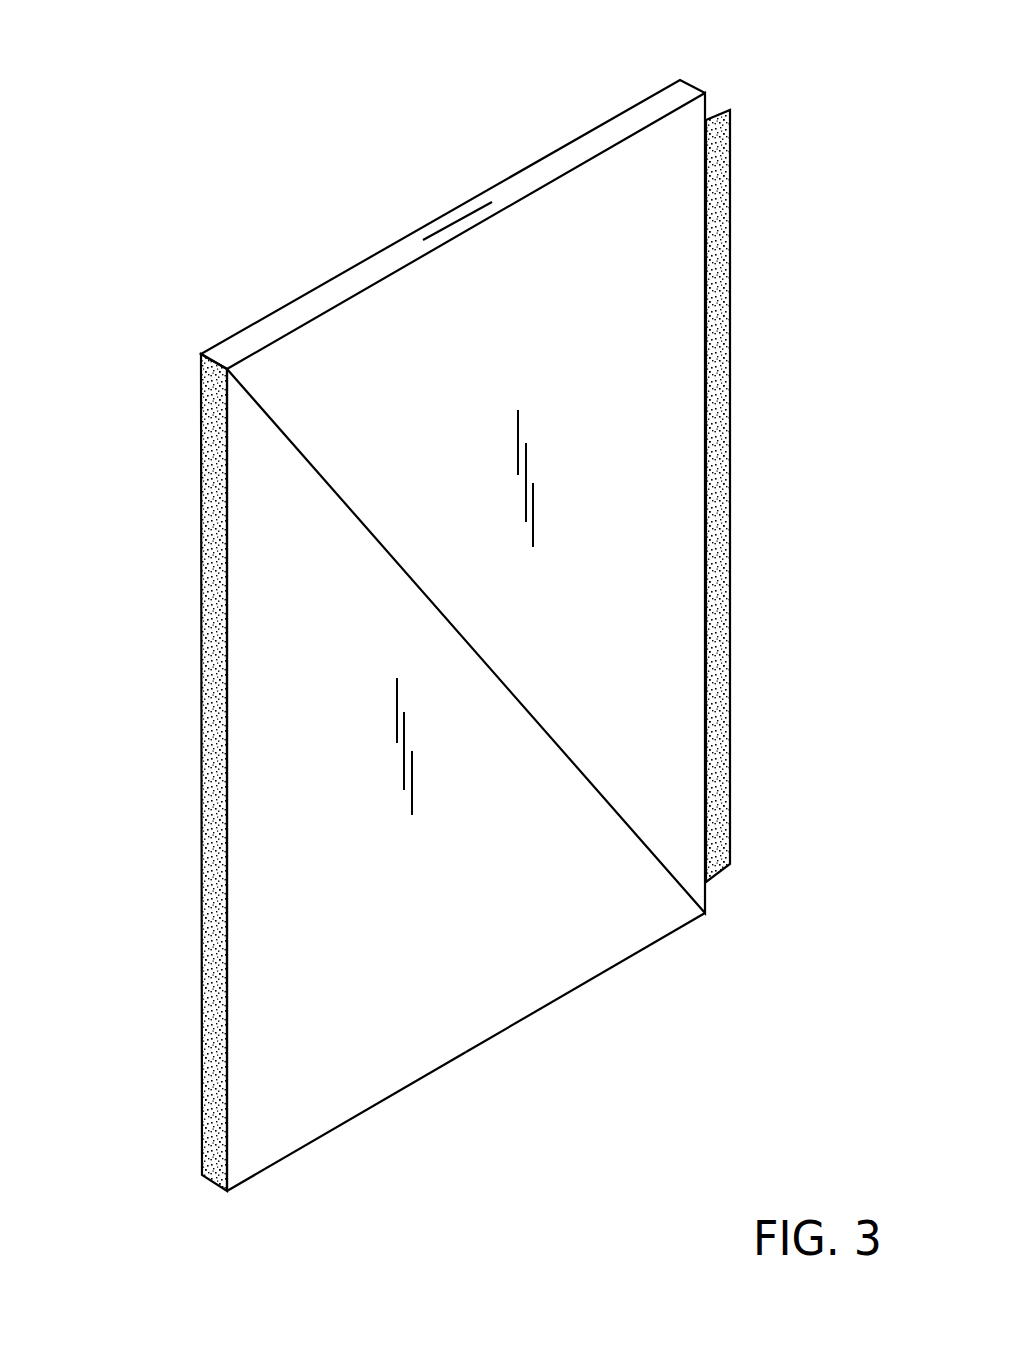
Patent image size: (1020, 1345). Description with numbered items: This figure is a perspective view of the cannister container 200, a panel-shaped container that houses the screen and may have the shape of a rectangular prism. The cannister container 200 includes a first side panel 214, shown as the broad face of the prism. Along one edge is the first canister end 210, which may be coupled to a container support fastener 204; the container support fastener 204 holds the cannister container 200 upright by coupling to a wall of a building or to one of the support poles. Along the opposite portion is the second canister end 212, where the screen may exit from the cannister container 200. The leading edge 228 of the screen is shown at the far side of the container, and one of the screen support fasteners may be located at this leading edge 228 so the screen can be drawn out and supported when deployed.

The cannister container 200 is at (497, 1012).
The container support fastener 204 is at (212, 875).
The first canister end 210 is at (252, 1170).
The second canister end 212 is at (610, 942).
The first side panel 214 is at (320, 372).
The leading edge 228 is at (710, 118).